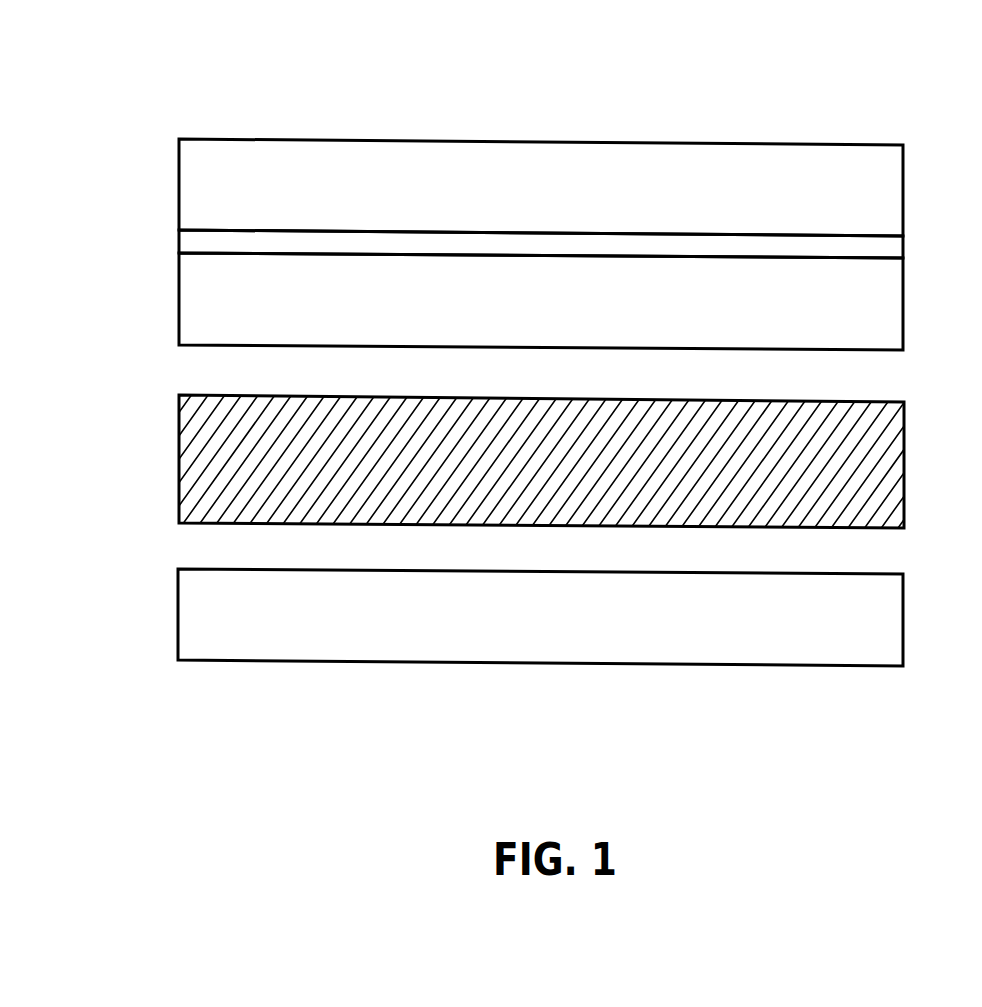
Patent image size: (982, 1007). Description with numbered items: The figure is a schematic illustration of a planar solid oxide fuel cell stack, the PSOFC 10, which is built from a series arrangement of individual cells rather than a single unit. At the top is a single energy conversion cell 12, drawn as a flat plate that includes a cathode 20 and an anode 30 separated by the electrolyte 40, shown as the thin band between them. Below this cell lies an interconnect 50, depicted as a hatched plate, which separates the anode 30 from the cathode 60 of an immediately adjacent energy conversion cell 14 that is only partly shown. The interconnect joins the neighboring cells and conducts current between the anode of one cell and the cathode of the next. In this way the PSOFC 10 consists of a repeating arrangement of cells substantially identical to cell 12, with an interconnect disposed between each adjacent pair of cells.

The PSOFC 10 is at (252, 60).
The energy conversion cell 12 is at (175, 345).
The immediately adjacent energy conversion cell 14 is at (175, 777).
The cathode 20 is at (890, 197).
The anode 30 is at (880, 307).
The electrolyte 40 is at (890, 248).
The interconnect 50 is at (880, 455).
The cathode 60 is at (878, 620).